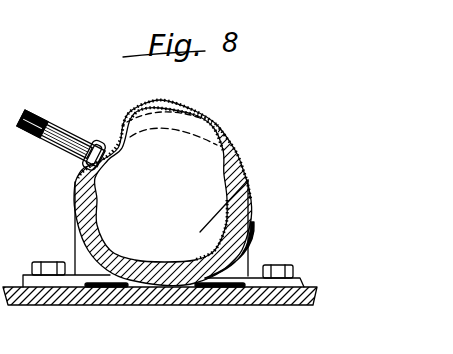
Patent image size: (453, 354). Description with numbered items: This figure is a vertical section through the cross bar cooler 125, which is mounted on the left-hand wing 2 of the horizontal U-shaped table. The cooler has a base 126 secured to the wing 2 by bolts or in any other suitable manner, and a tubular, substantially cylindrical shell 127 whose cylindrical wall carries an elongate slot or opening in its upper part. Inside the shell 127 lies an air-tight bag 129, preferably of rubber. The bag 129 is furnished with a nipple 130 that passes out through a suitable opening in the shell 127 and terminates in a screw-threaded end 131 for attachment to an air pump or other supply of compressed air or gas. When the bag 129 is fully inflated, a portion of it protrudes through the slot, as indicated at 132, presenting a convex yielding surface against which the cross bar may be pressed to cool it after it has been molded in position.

The wing 2 is at (313, 287).
The cross bar cooler 125 is at (226, 188).
The base 126 is at (241, 257).
The tubular substantially cylindrical shell 127 is at (243, 170).
The air-tight bag 129 is at (226, 205).
The nipple 130 is at (61, 129).
The screw-threaded end 131 is at (32, 124).
The protruding portion of bag 132 is at (203, 113).